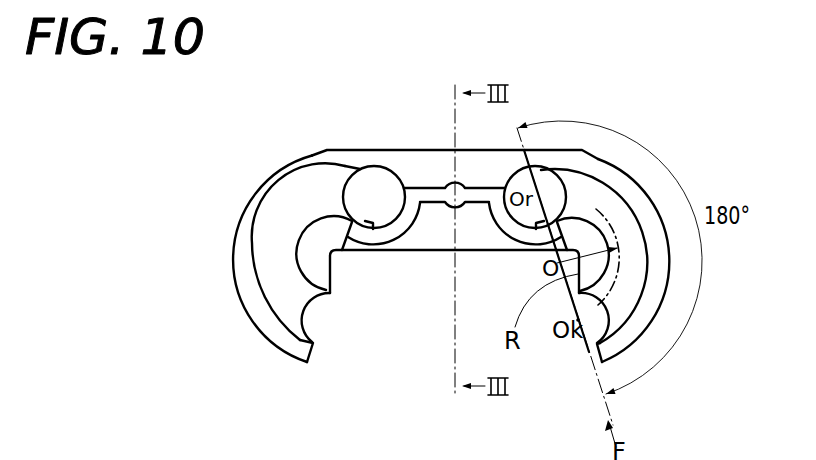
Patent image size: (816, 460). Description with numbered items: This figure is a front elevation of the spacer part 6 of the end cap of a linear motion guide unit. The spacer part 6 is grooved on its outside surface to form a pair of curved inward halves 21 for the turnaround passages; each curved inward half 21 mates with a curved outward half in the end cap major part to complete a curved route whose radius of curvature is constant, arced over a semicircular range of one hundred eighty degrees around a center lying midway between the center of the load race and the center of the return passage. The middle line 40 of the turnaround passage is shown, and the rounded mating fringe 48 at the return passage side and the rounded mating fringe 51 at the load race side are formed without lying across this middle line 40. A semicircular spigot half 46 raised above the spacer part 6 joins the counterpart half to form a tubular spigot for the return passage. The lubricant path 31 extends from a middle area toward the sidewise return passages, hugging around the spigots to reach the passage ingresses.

The spacer part 6 is at (238, 277).
The curved inward half 21 is at (278, 238).
The lubricant path 31 is at (432, 189).
The middle line 40 is at (624, 247).
The spigot half 46 is at (325, 158).
The rounded mating fringe 48 is at (362, 162).
The rounded mating fringe 51 is at (298, 352).